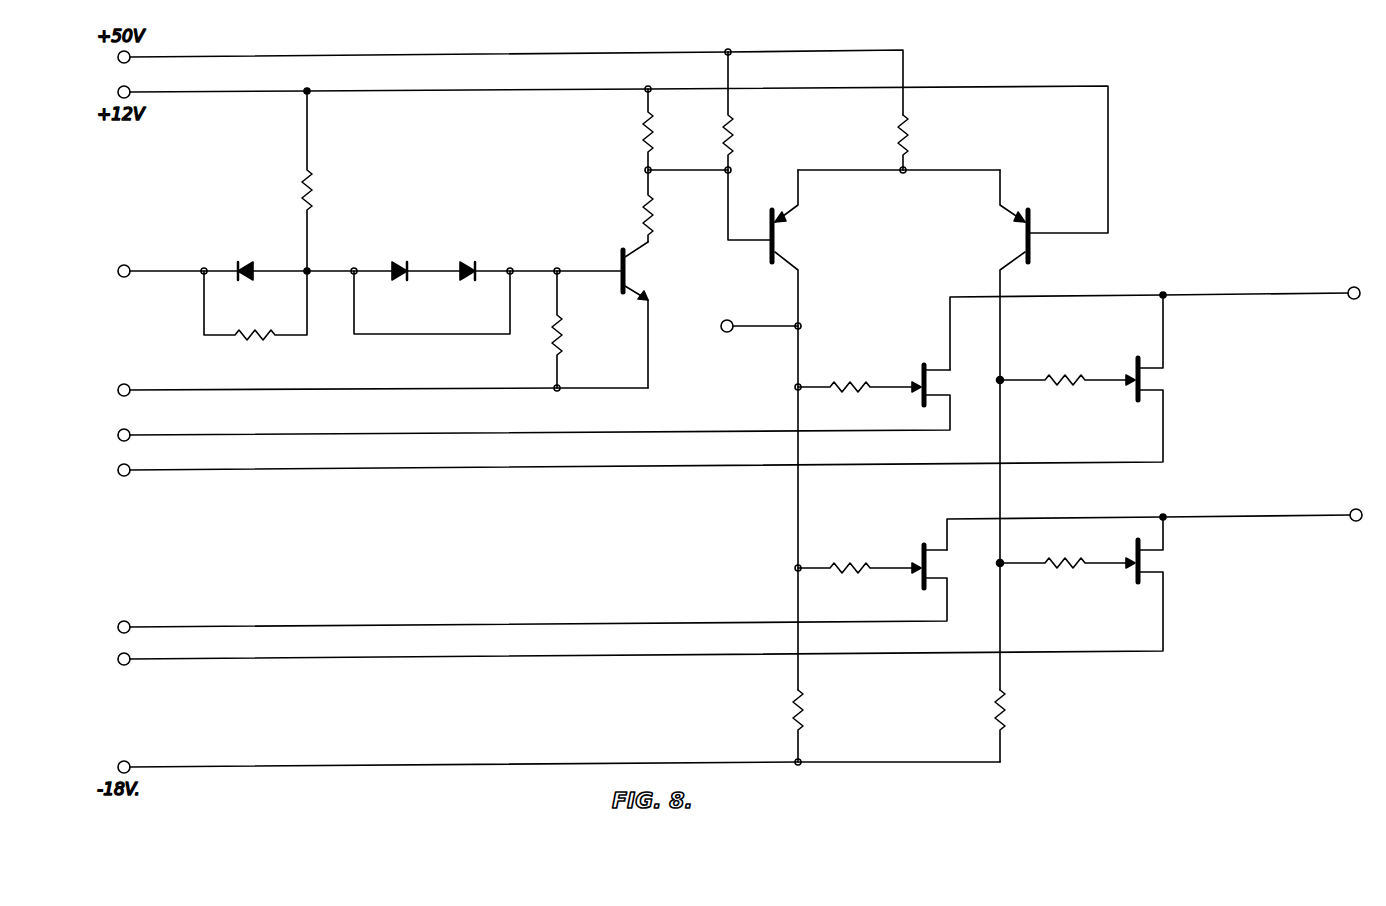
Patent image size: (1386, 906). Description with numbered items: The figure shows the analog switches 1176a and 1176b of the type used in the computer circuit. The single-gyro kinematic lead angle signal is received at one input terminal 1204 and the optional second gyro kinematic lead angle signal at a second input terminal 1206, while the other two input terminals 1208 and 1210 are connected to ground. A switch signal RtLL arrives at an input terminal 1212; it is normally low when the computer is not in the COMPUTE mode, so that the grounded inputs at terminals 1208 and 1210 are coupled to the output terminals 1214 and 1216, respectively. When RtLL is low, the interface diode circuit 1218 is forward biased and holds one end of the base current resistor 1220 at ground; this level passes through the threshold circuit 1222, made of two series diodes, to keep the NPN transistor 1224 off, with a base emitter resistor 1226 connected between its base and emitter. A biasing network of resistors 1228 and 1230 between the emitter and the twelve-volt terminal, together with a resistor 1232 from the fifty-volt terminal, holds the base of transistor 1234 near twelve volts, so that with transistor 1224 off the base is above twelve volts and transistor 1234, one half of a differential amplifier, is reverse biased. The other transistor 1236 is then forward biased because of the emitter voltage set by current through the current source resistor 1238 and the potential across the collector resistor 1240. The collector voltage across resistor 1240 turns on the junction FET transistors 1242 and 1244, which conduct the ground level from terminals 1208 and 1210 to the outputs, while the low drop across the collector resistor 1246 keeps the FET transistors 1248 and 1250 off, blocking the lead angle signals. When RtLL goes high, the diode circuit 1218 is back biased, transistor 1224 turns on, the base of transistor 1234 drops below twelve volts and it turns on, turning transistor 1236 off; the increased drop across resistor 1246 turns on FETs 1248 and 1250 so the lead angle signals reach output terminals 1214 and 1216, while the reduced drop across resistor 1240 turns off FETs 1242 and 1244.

The analog switch 1176a is at (1144, 674).
The analog switch 1176b is at (1114, 254).
The input terminal 1204 is at (150, 614).
The second input terminal 1206 is at (145, 422).
The input terminal 1208 is at (124, 666).
The input terminal 1210 is at (124, 477).
The input terminal 1212 is at (127, 266).
The output terminal 1214 is at (1357, 509).
The output terminal 1216 is at (1356, 287).
The interface diode circuit 1218 is at (252, 265).
The base current resistor 1220 is at (312, 192).
The threshold circuit 1222 is at (428, 278).
The NPN transistor 1224 is at (628, 283).
The base emitter resistor 1226 is at (560, 350).
The resistor 1228 is at (642, 204).
The resistor 1230 is at (642, 125).
The resistor 1232 is at (735, 138).
The transistor 1234 is at (778, 247).
The transistor 1236 is at (1022, 234).
The current source resistor 1238 is at (909, 138).
The collector resistor 1240 is at (1006, 722).
The junction FET transistor 1242 is at (1150, 562).
The junction FET transistor 1244 is at (1148, 380).
The collector resistor 1246 is at (802, 721).
The FET transistor 1248 is at (930, 567).
The FET transistor 1250 is at (930, 386).